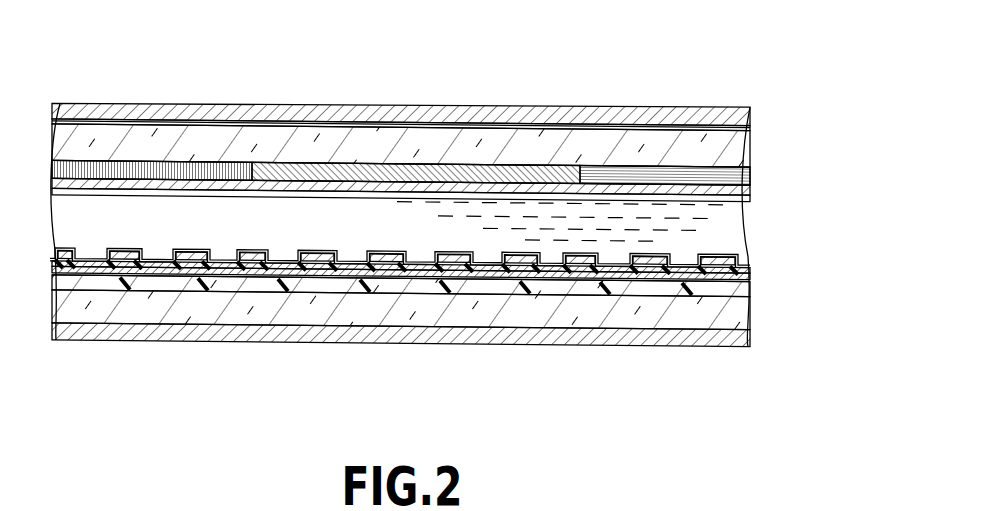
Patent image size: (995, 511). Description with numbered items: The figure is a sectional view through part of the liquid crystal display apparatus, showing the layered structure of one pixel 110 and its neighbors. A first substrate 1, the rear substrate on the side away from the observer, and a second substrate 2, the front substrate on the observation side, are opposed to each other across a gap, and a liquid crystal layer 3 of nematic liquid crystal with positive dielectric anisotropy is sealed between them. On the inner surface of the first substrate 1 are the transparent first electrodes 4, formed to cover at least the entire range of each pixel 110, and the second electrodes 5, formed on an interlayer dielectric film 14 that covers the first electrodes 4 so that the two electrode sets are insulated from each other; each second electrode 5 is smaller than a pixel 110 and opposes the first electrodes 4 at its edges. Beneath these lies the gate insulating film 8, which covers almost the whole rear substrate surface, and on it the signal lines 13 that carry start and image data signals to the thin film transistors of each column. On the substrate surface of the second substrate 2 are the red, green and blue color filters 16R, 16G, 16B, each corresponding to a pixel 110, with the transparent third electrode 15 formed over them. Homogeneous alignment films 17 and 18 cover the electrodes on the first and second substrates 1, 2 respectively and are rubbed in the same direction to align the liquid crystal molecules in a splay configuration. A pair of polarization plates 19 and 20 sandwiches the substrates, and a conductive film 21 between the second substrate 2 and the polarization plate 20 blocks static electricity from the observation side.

The first substrate 1 is at (738, 312).
The second substrate 2 is at (738, 153).
The liquid crystal layer 3 is at (738, 228).
The first electrodes 4 is at (95, 262).
The second electrodes 5 is at (170, 266).
The gate insulating film 8 is at (630, 275).
The signal lines 13 is at (245, 285).
The interlayer dielectric film 14 is at (288, 270).
The third electrode 15 is at (489, 186).
The red color filter 16R is at (180, 165).
The green color filter 16G is at (328, 170).
The blue color filter 16B is at (678, 178).
The alignment film 17 is at (118, 247).
The alignment film 18 is at (212, 196).
The polarization plate 19 is at (125, 335).
The polarization plate 20 is at (99, 108).
The conductive film 21 is at (615, 128).
The pixels 110 is at (401, 94).